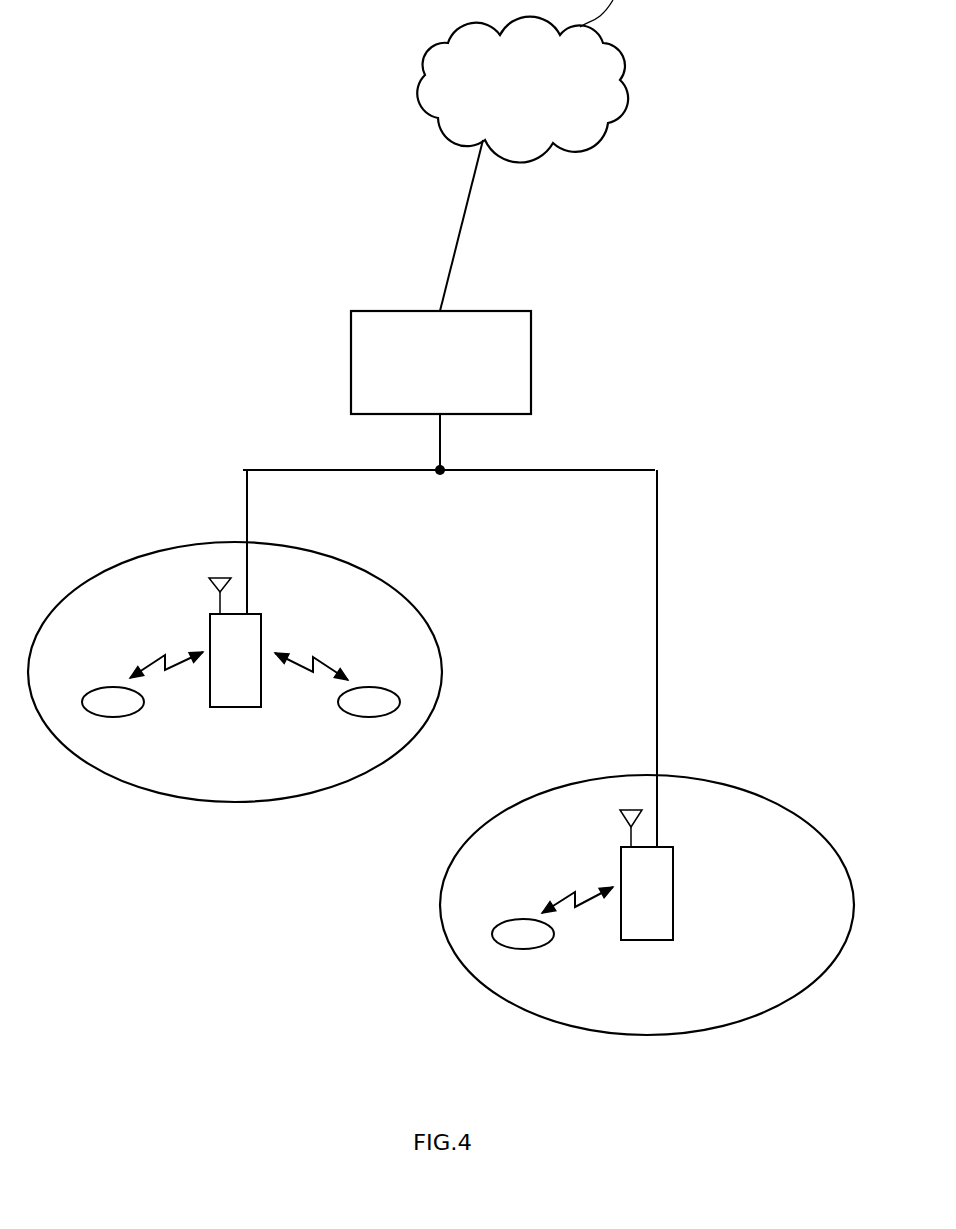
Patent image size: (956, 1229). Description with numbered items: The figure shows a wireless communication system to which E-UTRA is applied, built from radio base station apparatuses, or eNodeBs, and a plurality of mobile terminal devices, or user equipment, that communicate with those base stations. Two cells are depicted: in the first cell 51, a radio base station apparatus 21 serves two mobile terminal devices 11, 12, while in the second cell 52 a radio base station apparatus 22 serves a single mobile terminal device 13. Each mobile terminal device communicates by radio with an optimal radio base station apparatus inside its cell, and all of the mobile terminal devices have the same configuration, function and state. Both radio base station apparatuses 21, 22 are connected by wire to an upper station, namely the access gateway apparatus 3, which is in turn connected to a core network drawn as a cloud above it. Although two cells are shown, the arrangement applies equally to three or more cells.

The access gateway apparatus 3 is at (531, 350).
The cell 51 is at (382, 578).
The cell 52 is at (758, 795).
The radio base station apparatus 21 is at (262, 620).
The radio base station apparatus 22 is at (673, 889).
The mobile terminal device 11 is at (128, 717).
The mobile terminal device 12 is at (340, 717).
The mobile terminal device 13 is at (538, 948).